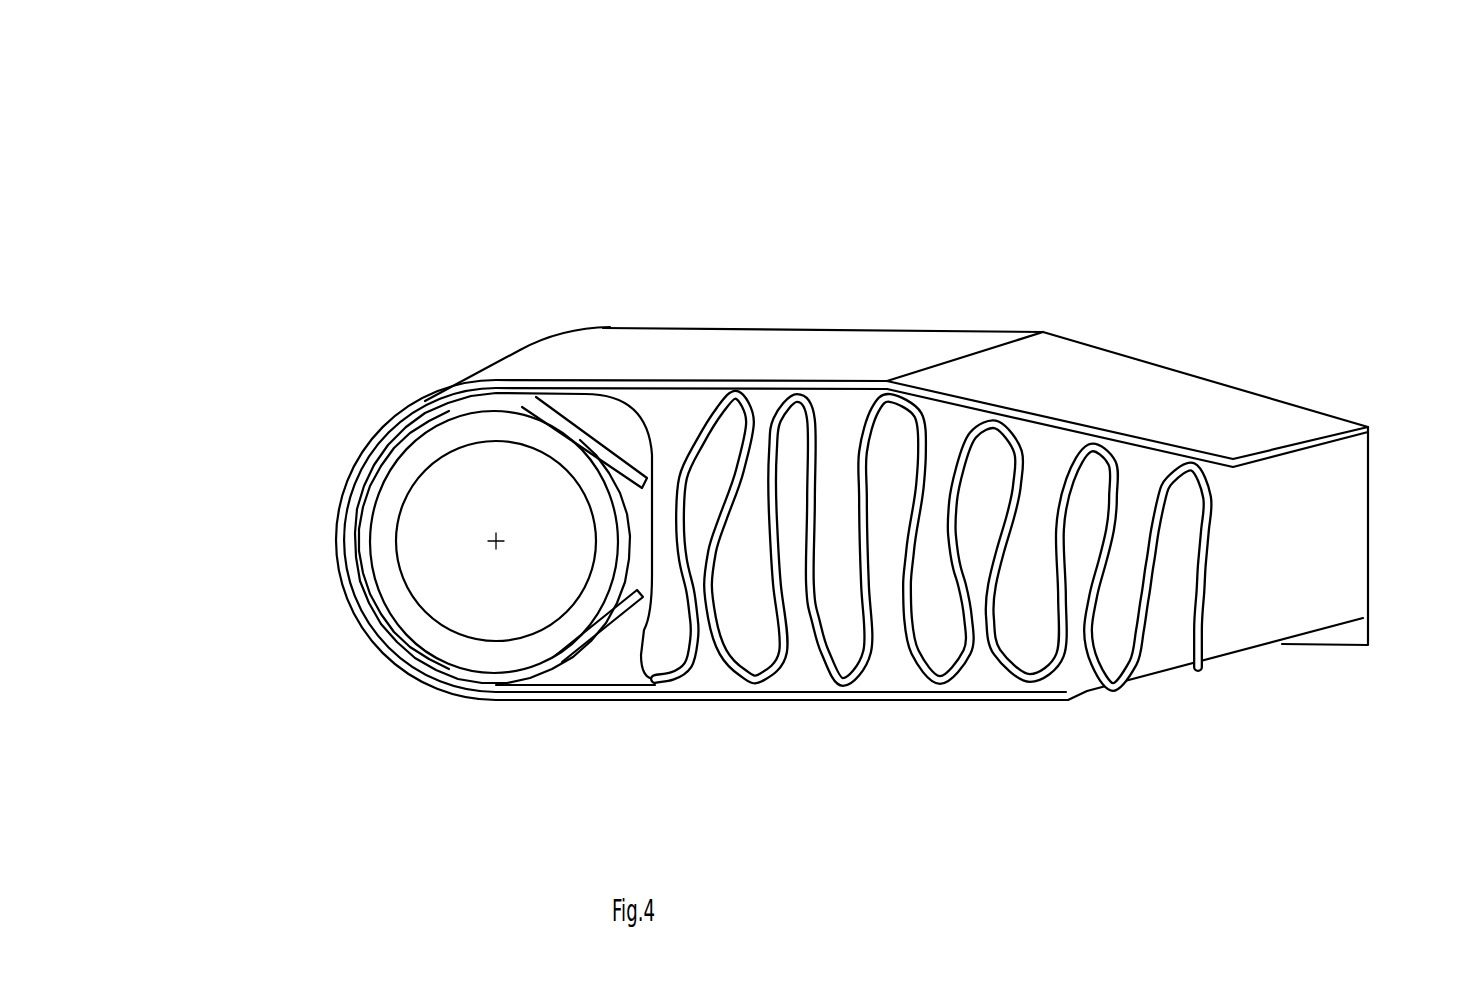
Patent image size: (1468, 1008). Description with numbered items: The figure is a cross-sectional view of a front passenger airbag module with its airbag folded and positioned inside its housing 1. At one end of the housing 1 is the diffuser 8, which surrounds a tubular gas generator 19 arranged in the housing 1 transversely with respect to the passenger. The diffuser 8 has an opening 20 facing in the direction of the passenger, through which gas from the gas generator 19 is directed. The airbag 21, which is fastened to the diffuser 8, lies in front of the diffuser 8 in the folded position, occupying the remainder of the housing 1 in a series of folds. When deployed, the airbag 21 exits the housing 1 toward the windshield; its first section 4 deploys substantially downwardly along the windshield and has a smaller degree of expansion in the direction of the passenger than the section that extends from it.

The housing 1 is at (673, 328).
The first section 4 is at (1288, 547).
The diffuser 8 is at (397, 460).
The tubular gas generator 19 is at (422, 613).
The opening 20 is at (643, 607).
The airbag 21 is at (923, 413).